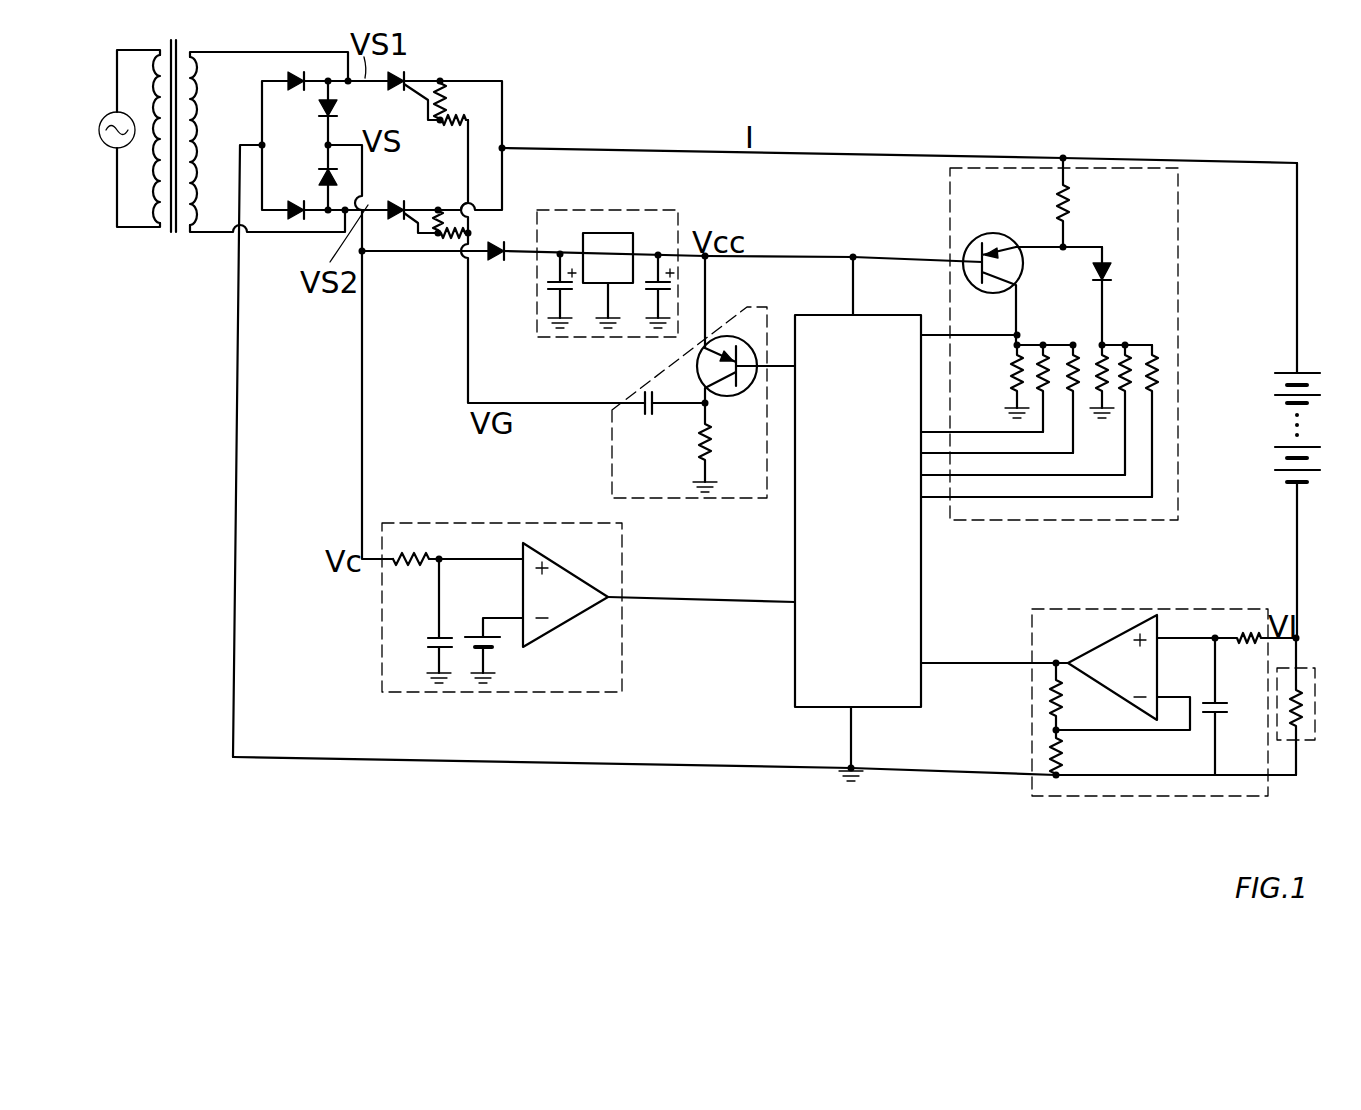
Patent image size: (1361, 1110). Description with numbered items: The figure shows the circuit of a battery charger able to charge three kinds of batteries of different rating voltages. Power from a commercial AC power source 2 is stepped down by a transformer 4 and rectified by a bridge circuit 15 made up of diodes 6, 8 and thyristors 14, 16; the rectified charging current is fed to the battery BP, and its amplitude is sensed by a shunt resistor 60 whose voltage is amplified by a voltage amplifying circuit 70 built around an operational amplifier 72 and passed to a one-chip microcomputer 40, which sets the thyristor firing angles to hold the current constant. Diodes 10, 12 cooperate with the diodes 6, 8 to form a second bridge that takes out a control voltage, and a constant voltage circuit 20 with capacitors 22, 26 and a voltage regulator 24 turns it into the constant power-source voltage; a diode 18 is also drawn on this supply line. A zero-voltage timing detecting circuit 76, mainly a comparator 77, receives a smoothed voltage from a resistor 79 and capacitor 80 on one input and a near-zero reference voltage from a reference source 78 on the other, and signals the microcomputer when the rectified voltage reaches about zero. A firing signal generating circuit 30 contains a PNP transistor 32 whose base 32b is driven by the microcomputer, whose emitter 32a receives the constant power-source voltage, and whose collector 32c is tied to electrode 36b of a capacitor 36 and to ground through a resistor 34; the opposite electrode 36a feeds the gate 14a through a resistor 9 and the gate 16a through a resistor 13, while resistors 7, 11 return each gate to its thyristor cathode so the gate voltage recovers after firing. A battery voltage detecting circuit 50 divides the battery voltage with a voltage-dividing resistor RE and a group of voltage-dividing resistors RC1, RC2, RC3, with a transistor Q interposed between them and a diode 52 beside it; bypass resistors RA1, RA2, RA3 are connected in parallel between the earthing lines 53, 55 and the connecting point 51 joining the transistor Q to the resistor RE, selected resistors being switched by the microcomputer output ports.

The commercial AC power source 2 is at (110, 147).
The transformer 4 is at (178, 27).
The diode 6 is at (296, 92).
The diode 8 is at (297, 203).
The diode 10 is at (337, 108).
The diode 12 is at (336, 180).
The thyristor 14 is at (407, 54).
The gate 14a is at (425, 97).
The bridge circuit 15 is at (450, 74).
The resistor 7 is at (447, 100).
The resistor 9 is at (470, 110).
The thyristor 16 is at (394, 220).
The gate 16a is at (409, 222).
The resistor 11 is at (430, 226).
The resistor 13 is at (452, 240).
The diode 18 is at (496, 262).
The constant voltage circuit 20 is at (577, 210).
The capacitor 22 is at (552, 300).
The voltage regulator 24 is at (603, 283).
The capacitor 26 is at (650, 300).
The firing signal generating circuit 30 is at (749, 307).
The PNP transistor 32 is at (731, 396).
The emitter 32a is at (708, 350).
The base 32b is at (747, 393).
The collector 32c is at (726, 385).
The resistor 34 is at (708, 443).
The capacitor 36 is at (625, 471).
The electrode 36a is at (641, 405).
The electrode 36b is at (662, 415).
The one-chip microcomputer 40 is at (890, 619).
The battery voltage detecting circuit 50 is at (1188, 222).
The connecting point 51 is at (1063, 250).
The diode 52 is at (1110, 272).
The earthing line 53 is at (1108, 403).
The earthing line 55 is at (857, 796).
The shunt resistor 60 is at (1312, 728).
The voltage amplifying circuit 70 is at (1200, 607).
The operational amplifier 72 is at (1132, 683).
The zero-voltage timing detecting circuit 76 is at (623, 629).
The comparator 77 is at (570, 545).
The reference voltage source 78 is at (493, 645).
The resistor 79 is at (403, 532).
The capacitor 80 is at (422, 621).
The transistor Q is at (993, 269).
The voltage-dividing resistor RE is at (1088, 202).
The voltage-dividing resistor RC1 is at (992, 381).
The voltage-dividing resistor RC2 is at (1040, 387).
The voltage-dividing resistor RC3 is at (1073, 385).
The bypass resistor RA1 is at (1118, 346).
The bypass resistor RA2 is at (1130, 350).
The bypass resistor RA3 is at (1150, 375).
The battery BP is at (1316, 400).